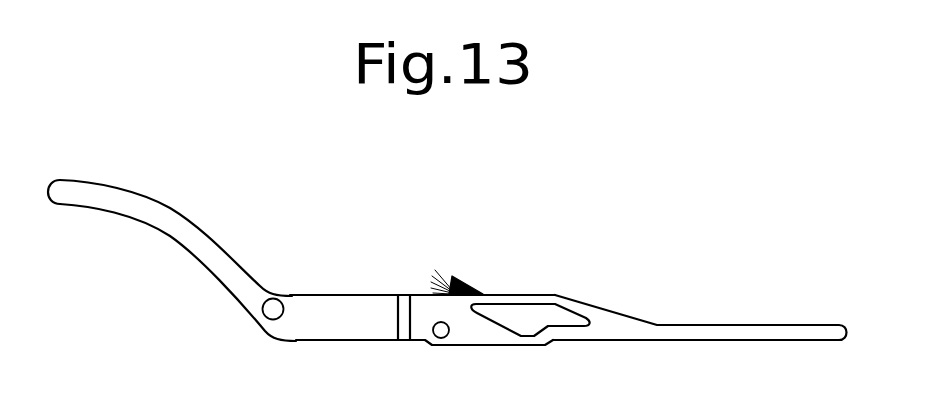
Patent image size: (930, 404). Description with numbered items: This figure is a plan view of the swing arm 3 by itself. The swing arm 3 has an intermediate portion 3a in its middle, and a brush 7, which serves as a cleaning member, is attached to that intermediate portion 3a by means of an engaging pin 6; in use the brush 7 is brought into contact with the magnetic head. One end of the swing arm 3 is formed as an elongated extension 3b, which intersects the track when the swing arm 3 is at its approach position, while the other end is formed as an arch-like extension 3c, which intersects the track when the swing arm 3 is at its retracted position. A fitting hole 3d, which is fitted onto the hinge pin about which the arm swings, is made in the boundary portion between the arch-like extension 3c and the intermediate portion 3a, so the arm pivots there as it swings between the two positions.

The swing arm 3 is at (358, 268).
The intermediate portion 3a is at (385, 330).
The elongated extension 3b is at (722, 325).
The arch-like extension 3c is at (125, 197).
The fitting hole 3d is at (268, 317).
The engaging pin 6 is at (441, 338).
The brush 7 is at (452, 275).